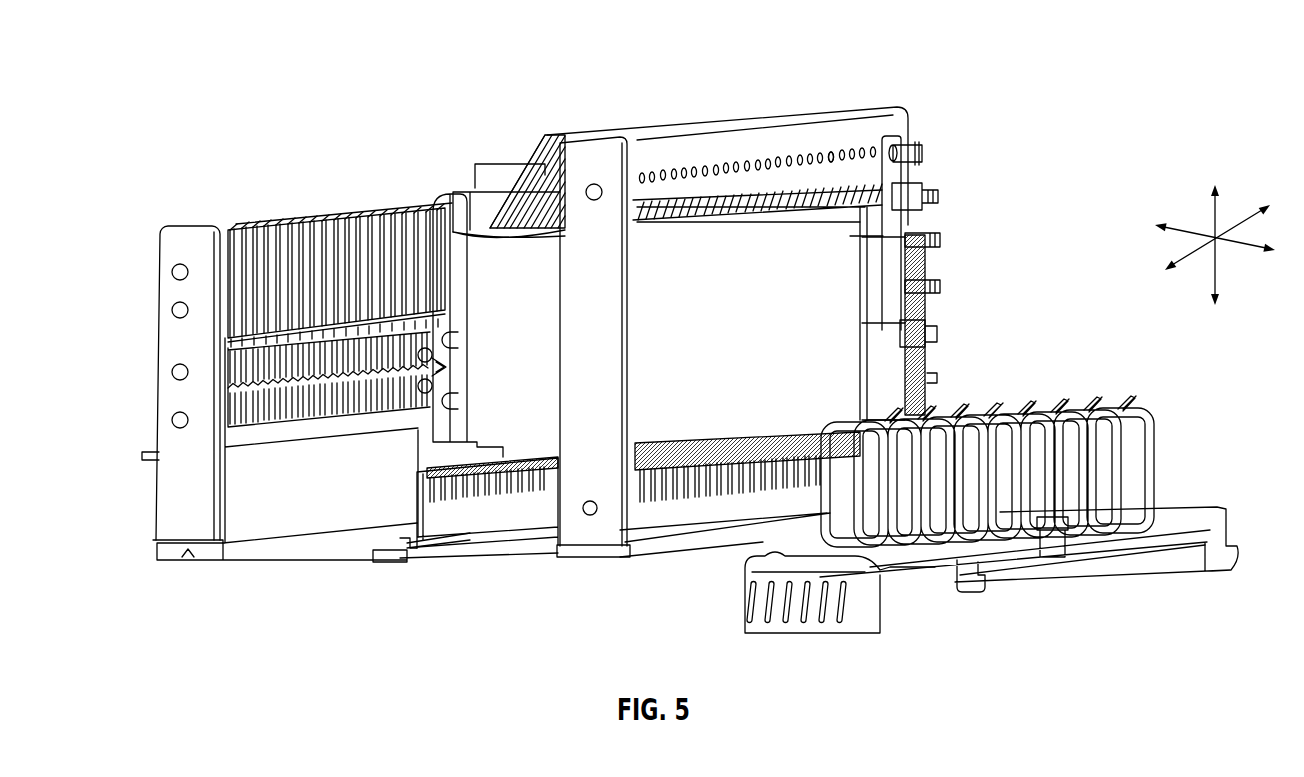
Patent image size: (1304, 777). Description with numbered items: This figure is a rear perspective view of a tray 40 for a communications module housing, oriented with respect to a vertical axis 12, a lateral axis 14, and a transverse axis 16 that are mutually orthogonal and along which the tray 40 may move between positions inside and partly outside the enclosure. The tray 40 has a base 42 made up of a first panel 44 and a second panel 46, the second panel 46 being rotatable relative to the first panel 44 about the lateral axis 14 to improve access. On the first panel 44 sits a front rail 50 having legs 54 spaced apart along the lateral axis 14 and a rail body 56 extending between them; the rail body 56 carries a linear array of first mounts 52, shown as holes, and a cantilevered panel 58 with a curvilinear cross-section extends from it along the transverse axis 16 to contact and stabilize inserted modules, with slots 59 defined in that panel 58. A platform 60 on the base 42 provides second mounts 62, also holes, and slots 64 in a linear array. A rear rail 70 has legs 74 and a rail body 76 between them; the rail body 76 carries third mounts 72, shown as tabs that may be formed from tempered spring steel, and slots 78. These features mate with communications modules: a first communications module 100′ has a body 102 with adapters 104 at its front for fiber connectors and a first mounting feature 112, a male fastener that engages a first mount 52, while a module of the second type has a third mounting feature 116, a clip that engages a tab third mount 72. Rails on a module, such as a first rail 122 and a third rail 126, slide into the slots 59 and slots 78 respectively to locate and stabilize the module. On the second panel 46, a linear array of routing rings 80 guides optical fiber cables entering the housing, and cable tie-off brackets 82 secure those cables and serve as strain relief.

The vertical axis 12 is at (1213, 218).
The lateral axis 14 is at (1195, 252).
The transverse axis 16 is at (1255, 246).
The tray 40 is at (414, 95).
The base 42 is at (301, 593).
The first panel 44 is at (267, 548).
The second panel 46 is at (1020, 582).
The front rail 50 is at (740, 95).
The first mounts 52 is at (852, 130).
The legs 54 is at (609, 160).
The rail body 56 is at (685, 150).
The panel 58 is at (530, 150).
The slots 59 is at (512, 227).
The platform 60 is at (485, 530).
The second mounts 62 is at (709, 510).
The slots 64 is at (751, 510).
The rear rail 70 is at (269, 338).
The third mounts 72 is at (316, 417).
The legs 74 is at (175, 238).
The rail body 76 is at (312, 225).
The slots 78 is at (380, 195).
The routing rings 80 is at (1020, 386).
The cable tie-off brackets 82 is at (836, 655).
The first communications module 100′ is at (874, 182).
The body 102 is at (850, 185).
The adapters 104 is at (950, 230).
The first mounting feature 112 is at (910, 148).
The third mounting feature 116 is at (440, 400).
The first rail 122 is at (486, 165).
The third rail 126 is at (446, 195).